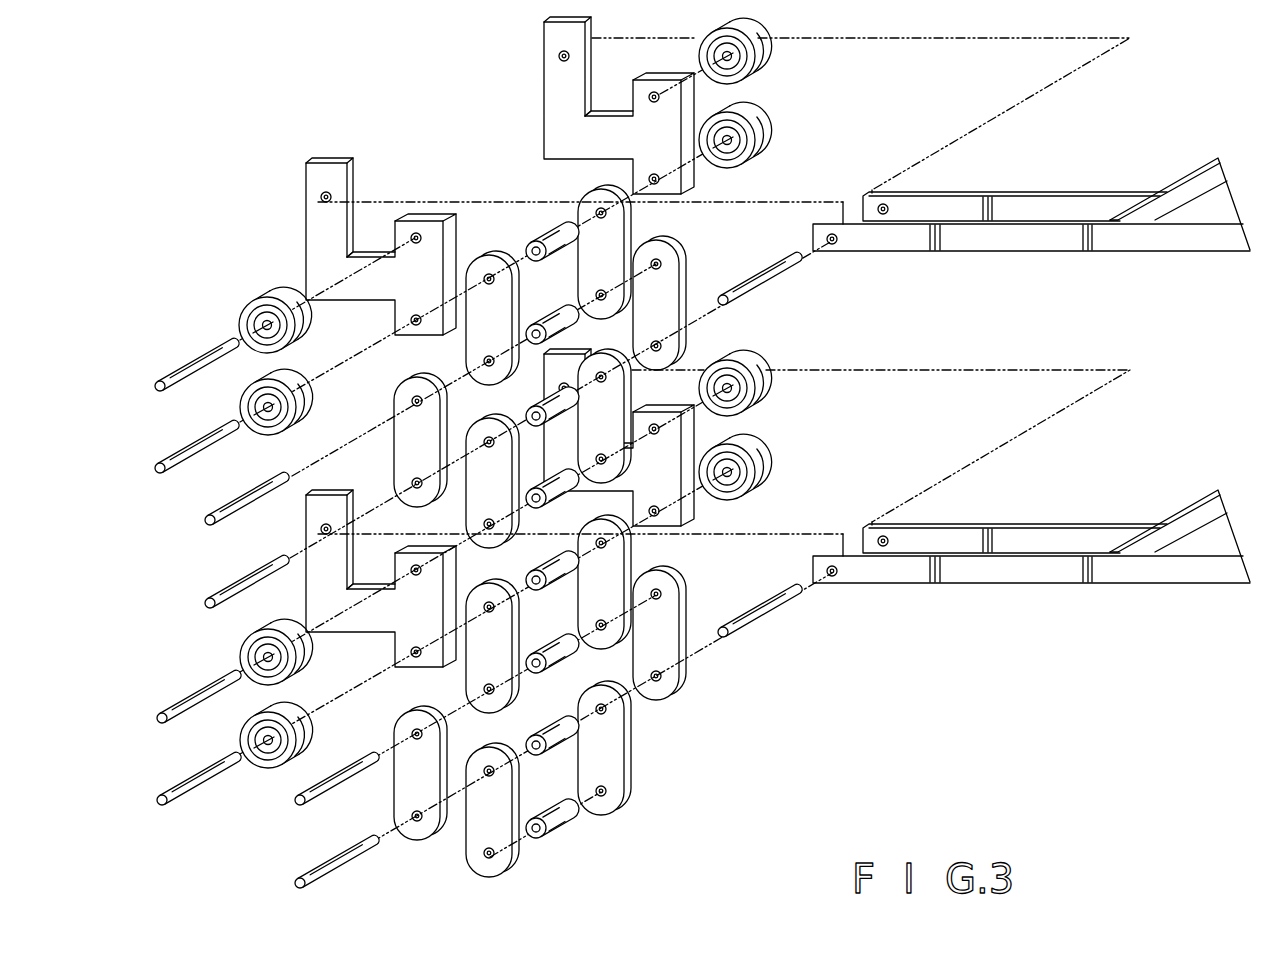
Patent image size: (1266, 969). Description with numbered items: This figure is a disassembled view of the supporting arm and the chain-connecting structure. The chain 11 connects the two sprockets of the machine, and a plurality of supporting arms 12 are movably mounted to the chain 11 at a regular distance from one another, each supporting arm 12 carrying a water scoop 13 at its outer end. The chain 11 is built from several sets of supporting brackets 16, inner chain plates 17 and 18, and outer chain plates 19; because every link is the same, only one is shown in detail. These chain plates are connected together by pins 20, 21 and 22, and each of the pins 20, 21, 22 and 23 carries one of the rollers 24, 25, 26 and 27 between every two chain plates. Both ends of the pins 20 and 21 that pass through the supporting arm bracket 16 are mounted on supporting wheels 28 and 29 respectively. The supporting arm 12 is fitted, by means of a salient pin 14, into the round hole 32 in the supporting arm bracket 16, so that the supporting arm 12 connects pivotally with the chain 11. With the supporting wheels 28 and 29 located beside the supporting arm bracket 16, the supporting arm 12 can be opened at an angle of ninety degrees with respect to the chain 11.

The chain 11 is at (428, 147).
The supporting arm 12 is at (968, 240).
The water scoop 13 is at (1213, 212).
The salient pin 14 is at (766, 284).
The supporting bracket 16 is at (558, 128).
The inner chain plate 17 is at (618, 412).
The inner chain plate 18 is at (620, 602).
The outer chain plate 19 is at (396, 466).
The pin 20 is at (182, 706).
The pin 21 is at (186, 794).
The pin 22 is at (331, 785).
The pin 23 is at (301, 879).
The roller 24 is at (537, 488).
The roller 25 is at (575, 570).
The roller 26 is at (572, 652).
The roller 27 is at (570, 733).
The supporting wheel 28 is at (242, 653).
The supporting wheel 29 is at (242, 738).
The round hole 32 is at (321, 198).